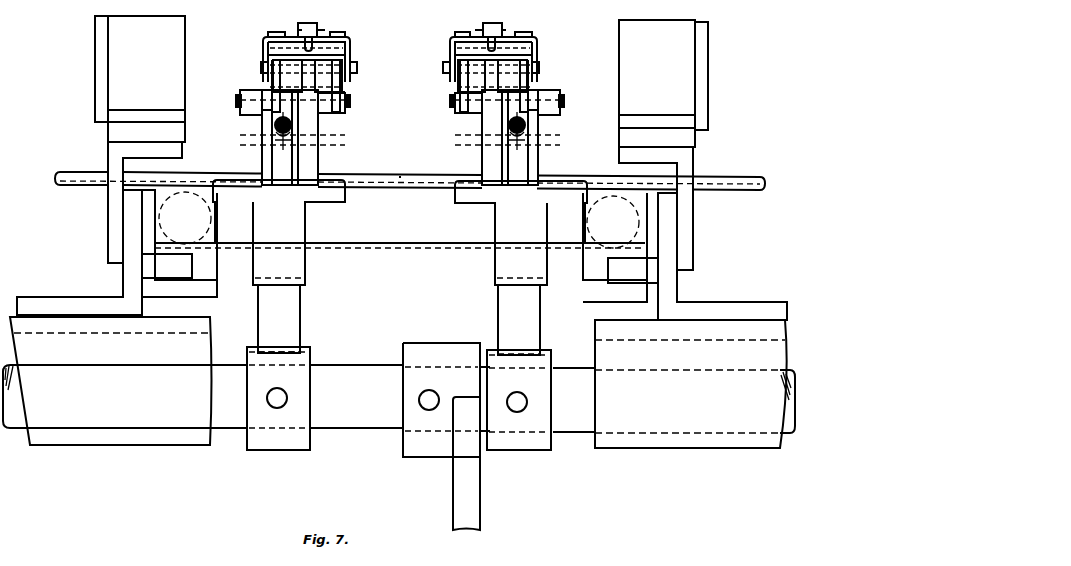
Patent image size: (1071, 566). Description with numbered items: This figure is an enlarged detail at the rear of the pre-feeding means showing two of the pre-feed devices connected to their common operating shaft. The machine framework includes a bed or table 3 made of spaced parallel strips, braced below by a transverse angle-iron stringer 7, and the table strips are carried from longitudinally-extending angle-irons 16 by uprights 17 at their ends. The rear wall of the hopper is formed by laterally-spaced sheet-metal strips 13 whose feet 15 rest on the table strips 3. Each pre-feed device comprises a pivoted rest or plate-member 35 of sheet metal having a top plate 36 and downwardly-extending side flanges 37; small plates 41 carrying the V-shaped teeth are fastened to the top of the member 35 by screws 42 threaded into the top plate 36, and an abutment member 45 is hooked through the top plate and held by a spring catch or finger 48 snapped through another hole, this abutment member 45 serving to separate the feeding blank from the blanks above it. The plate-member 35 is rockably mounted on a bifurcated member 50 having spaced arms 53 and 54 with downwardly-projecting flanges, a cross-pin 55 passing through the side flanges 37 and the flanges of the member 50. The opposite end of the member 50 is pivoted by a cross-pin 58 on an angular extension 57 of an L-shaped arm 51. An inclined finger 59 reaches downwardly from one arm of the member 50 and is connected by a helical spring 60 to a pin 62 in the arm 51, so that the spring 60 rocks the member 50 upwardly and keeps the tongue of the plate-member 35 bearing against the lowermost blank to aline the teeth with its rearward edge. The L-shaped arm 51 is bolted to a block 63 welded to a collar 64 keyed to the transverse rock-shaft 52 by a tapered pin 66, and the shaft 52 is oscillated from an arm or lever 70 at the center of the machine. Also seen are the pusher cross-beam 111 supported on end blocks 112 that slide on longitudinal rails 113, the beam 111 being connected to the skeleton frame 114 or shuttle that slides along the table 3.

The bed or table 3 is at (174, 134).
The angle-iron stringer 7 is at (134, 437).
The sheet-metal strips 13 is at (176, 50).
The feet 15 is at (122, 118).
The angle-irons 16 is at (105, 296).
The uprights 17 is at (114, 223).
The pivoted rest or plate-member 35 is at (356, 43).
The top plate 36 is at (268, 44).
The side flanges 37 is at (270, 58).
The plates 41 is at (273, 34).
The screws 42 is at (287, 34).
The abutment member 45 is at (322, 30).
The spring catch or finger 48 is at (286, 36).
The rockable member 50 is at (357, 89).
The L-shaped arm 51 is at (294, 233).
The rock-shaft 52 is at (369, 368).
The arm 53 is at (278, 80).
The arm 54 is at (338, 80).
The cross-pin 55 is at (261, 68).
The angular extension 57 is at (318, 155).
The cross-pin 58 is at (333, 103).
The inclined finger 59 is at (278, 120).
The helical spring 60 is at (283, 146).
The pin 62 is at (272, 138).
The block 63 is at (290, 326).
The collar 64 is at (305, 425).
The tapered pin 66 is at (276, 398).
The arm or lever 70 is at (470, 483).
The cross-beam 111 is at (411, 186).
The end blocks 112 is at (205, 282).
The rails 113 is at (188, 268).
The skeleton frame 114 is at (398, 240).